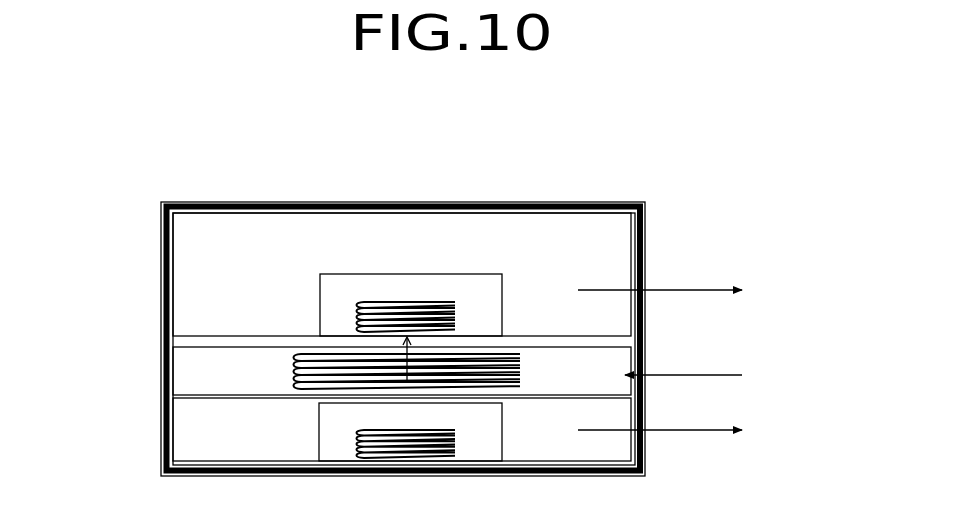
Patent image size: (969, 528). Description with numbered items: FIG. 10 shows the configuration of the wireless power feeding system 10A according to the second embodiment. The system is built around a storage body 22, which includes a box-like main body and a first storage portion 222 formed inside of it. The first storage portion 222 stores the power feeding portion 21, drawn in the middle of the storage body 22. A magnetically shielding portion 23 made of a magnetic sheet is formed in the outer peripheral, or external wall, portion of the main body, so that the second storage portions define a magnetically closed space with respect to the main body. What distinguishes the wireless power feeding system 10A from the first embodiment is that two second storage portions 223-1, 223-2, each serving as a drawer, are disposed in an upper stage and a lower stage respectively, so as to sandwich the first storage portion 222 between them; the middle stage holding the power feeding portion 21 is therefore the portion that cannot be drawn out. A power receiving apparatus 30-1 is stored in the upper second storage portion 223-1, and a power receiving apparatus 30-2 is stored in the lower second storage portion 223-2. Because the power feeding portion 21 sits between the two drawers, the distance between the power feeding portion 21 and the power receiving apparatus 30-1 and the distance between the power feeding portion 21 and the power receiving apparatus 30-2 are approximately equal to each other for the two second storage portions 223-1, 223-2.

The wireless power feeding system 10A is at (430, 166).
The storage body 22 is at (583, 199).
The magnetically shielding portion 23 is at (646, 232).
The first storage portion 222 is at (184, 378).
The second storage portion 223-1 is at (636, 261).
The second storage portion 223-2 is at (630, 456).
The power feeding portion 21 is at (618, 357).
The power receiving apparatus 30-1 is at (474, 266).
The power receiving apparatus 30-2 is at (505, 451).